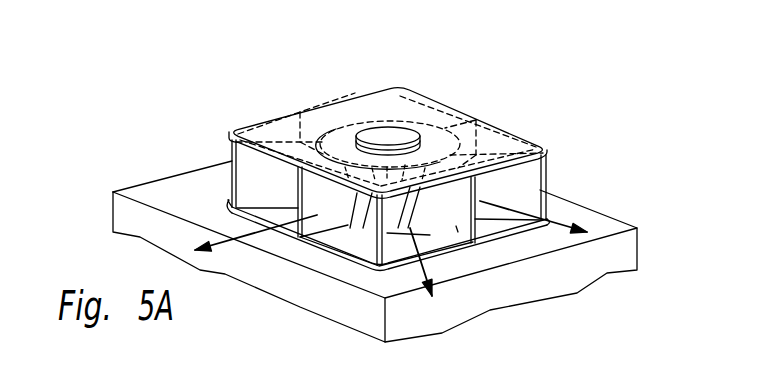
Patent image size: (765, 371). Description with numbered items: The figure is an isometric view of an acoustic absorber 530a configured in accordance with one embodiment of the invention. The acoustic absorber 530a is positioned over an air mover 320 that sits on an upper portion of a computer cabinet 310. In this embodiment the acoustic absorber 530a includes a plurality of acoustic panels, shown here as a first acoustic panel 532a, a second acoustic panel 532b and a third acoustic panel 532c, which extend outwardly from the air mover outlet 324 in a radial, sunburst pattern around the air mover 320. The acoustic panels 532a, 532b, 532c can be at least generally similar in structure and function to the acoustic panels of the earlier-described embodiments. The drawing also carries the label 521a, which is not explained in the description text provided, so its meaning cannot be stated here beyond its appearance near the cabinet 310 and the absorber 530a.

The computer cabinet 310 is at (125, 189).
The air mover 320 is at (377, 128).
The air mover outlet 324 is at (352, 204).
The acoustic absorber 530a is at (509, 125).
The airflow outlet direction 521a is at (258, 246).
The first acoustic panel 532a is at (383, 240).
The second acoustic panel 532b is at (458, 228).
The third acoustic panel 532c is at (527, 177).